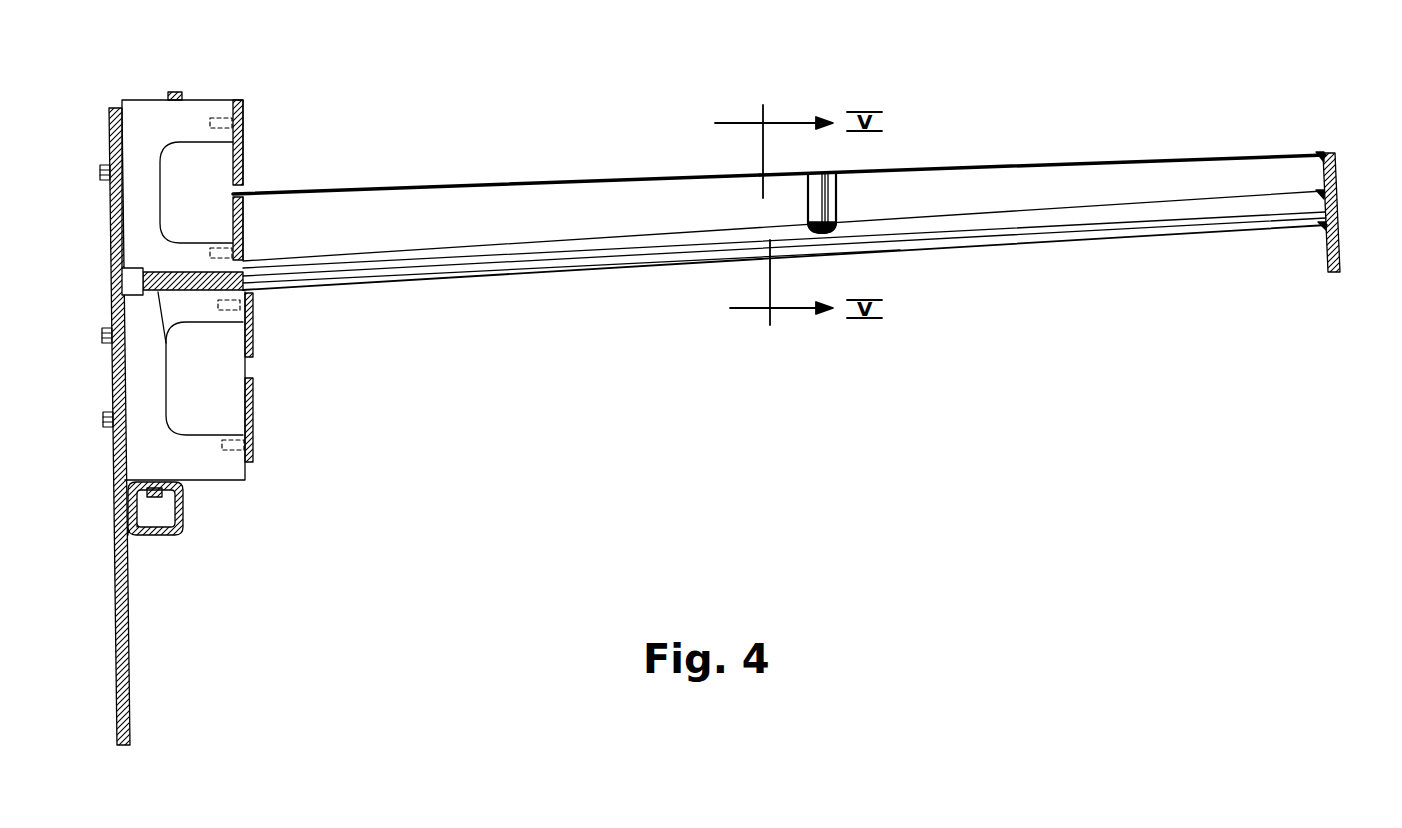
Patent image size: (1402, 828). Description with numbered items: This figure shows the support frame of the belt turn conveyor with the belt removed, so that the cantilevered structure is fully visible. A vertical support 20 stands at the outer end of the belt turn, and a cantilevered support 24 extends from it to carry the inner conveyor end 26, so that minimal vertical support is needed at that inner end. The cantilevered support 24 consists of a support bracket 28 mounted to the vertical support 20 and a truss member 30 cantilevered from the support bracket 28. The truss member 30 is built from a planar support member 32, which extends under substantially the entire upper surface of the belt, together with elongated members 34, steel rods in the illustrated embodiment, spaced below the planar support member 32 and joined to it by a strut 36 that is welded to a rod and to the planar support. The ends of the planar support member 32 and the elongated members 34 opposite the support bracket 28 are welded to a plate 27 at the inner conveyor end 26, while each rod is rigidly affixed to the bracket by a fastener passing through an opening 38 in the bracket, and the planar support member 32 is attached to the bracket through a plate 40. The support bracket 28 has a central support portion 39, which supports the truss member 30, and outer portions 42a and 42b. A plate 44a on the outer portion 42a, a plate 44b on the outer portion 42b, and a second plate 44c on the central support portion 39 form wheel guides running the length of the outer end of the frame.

The vertical support 20 is at (127, 620).
The cantilevered support 24 is at (400, 184).
The inner conveyor end 26 is at (1337, 182).
The plate 27 is at (1335, 172).
The support bracket 28 is at (195, 110).
The truss member 30 is at (978, 160).
The planar support member 32 is at (1080, 160).
The elongated members 34 is at (1020, 240).
The strut 36 is at (837, 186).
The opening 38 is at (166, 343).
The central support portion 39 is at (202, 322).
The plate 40 is at (783, 226).
The outer portion 42a is at (158, 97).
The outer portion 42b is at (217, 480).
The plate 44a is at (235, 138).
The plate 44b is at (253, 417).
The second plate 44c is at (253, 325).